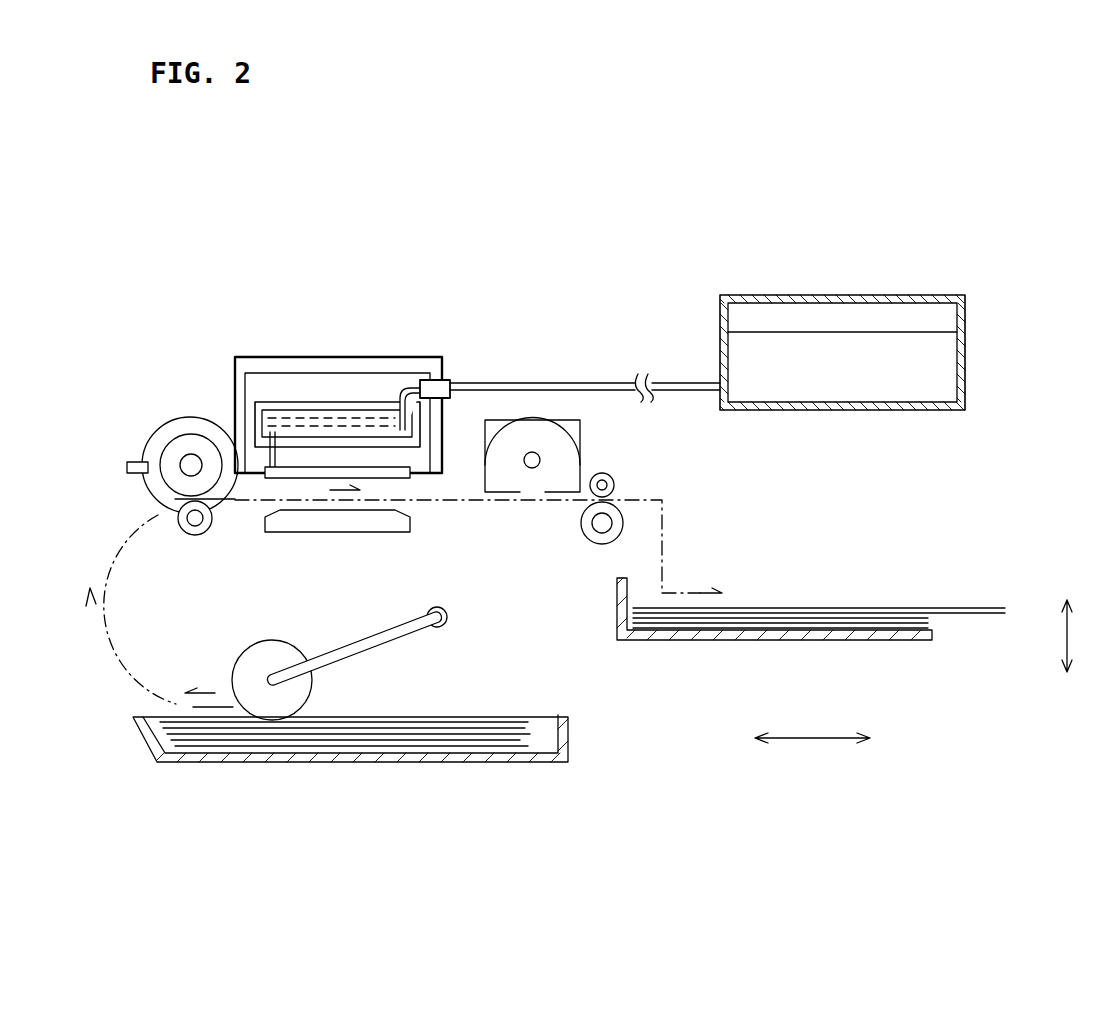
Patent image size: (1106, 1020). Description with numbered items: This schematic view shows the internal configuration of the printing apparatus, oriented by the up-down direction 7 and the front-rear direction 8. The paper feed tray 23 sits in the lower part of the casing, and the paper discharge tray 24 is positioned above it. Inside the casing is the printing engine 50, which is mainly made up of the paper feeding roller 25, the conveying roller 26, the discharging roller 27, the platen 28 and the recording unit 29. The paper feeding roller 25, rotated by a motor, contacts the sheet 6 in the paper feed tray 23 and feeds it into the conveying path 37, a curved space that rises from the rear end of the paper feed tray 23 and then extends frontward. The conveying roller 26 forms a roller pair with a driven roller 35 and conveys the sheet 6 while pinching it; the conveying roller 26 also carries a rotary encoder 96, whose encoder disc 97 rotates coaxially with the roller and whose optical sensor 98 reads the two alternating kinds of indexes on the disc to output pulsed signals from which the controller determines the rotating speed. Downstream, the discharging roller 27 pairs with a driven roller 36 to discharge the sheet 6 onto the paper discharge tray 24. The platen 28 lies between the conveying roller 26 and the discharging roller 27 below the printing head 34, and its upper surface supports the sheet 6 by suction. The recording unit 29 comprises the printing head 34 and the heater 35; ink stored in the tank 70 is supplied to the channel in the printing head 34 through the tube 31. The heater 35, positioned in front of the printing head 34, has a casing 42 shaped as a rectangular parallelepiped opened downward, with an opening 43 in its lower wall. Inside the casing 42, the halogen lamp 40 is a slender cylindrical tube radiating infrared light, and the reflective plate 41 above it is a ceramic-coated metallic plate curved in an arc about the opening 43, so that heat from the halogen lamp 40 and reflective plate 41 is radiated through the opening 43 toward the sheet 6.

The sheet 6 is at (438, 721).
The up-down direction 7 is at (1071, 636).
The front-rear direction 8 is at (813, 734).
The paper feed tray 23 is at (520, 714).
The paper discharge tray 24 is at (777, 641).
The paper feeding roller 25 is at (272, 640).
The conveying roller 26 is at (188, 436).
The discharging roller 27 is at (600, 545).
The platen 28 is at (337, 533).
The recording unit 29 is at (610, 210).
The tube 31 is at (470, 382).
The printing head 34 is at (406, 331).
The heater 35 is at (559, 402).
The driven roller 36 is at (612, 476).
The conveying path 37 is at (131, 530).
The halogen lamp 40 is at (532, 452).
The reflective plate 41 is at (493, 437).
The casing 42 is at (583, 455).
The opening 43 is at (540, 503).
The printing engine 50 is at (171, 340).
The tank 70 is at (965, 368).
The rotary encoder 96 is at (117, 425).
The encoder disc 97 is at (160, 428).
The optical sensor 98 is at (127, 467).